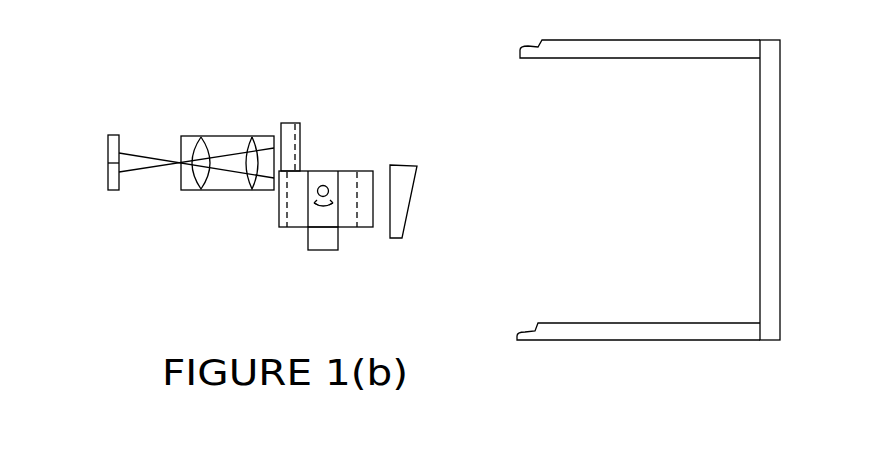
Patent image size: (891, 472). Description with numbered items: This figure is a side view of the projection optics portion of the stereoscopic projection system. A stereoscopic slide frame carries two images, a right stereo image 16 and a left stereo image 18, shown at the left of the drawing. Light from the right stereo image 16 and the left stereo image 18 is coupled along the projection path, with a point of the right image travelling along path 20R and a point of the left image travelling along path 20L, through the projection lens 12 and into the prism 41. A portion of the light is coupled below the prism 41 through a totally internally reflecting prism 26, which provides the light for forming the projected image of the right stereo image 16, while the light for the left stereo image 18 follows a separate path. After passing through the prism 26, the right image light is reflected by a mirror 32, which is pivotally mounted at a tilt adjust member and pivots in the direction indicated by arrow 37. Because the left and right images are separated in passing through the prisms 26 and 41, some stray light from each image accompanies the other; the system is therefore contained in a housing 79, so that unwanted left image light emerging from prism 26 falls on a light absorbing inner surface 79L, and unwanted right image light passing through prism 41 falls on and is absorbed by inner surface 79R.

The projection lens 12 is at (225, 130).
The right stereo image 16 is at (120, 137).
The left stereo image 18 is at (119, 185).
The path 20R is at (147, 152).
The path 20L is at (130, 173).
The totally internally reflecting prism 26 is at (358, 171).
The mirror 32 is at (368, 230).
The arrow 37 is at (323, 208).
The prism 41 is at (287, 122).
The housing 79 is at (780, 132).
The light absorbing inner surface 79L is at (582, 63).
The inner surface 79R is at (627, 322).